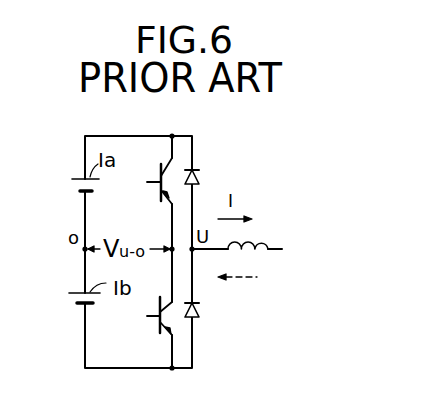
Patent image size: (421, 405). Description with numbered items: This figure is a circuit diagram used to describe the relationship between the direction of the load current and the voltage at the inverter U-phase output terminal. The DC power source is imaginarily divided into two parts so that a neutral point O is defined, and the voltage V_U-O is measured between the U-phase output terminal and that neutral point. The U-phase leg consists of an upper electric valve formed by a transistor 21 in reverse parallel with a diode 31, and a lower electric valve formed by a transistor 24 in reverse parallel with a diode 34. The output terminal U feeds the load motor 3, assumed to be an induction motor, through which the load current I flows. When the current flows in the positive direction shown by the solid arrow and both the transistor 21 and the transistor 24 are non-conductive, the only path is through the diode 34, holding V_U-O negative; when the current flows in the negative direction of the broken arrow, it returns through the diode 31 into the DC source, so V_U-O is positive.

The transistor 21 is at (147, 182).
The transistor 24 is at (147, 316).
The diode 31 is at (197, 175).
The diode 34 is at (196, 312).
The load motor 3 is at (264, 242).